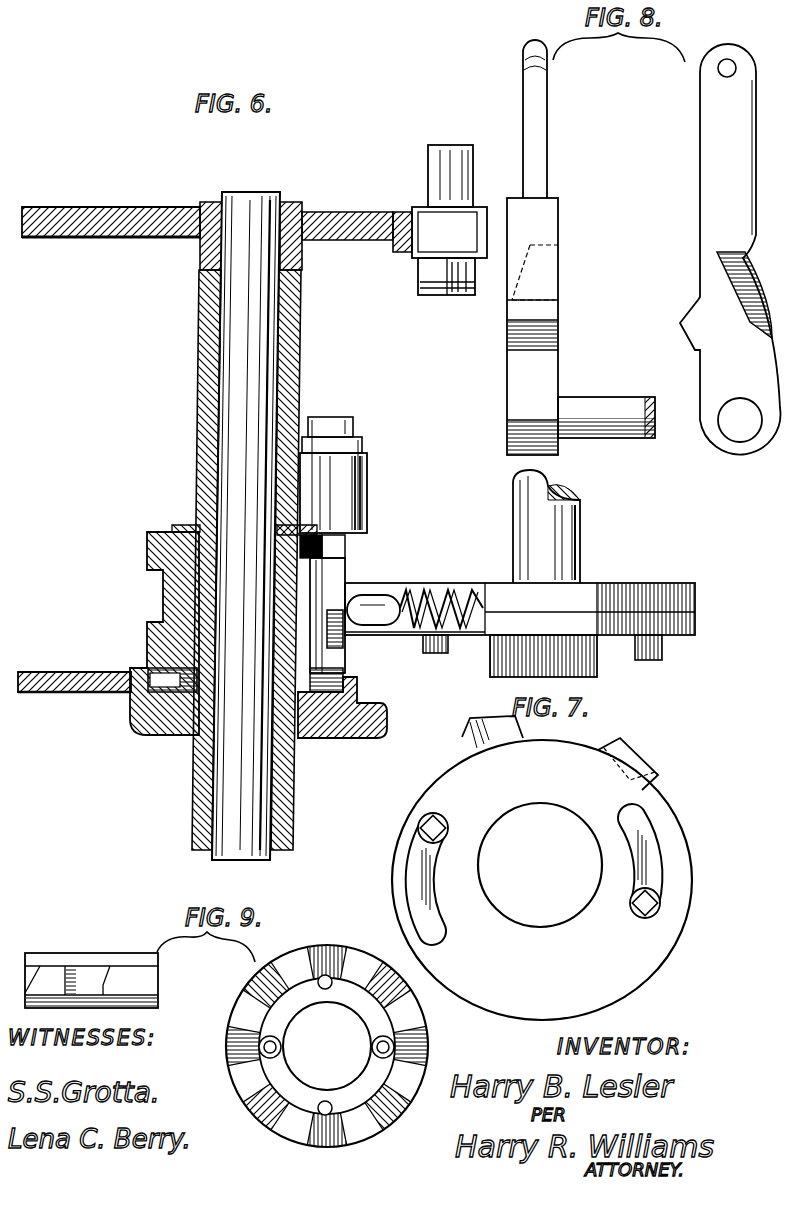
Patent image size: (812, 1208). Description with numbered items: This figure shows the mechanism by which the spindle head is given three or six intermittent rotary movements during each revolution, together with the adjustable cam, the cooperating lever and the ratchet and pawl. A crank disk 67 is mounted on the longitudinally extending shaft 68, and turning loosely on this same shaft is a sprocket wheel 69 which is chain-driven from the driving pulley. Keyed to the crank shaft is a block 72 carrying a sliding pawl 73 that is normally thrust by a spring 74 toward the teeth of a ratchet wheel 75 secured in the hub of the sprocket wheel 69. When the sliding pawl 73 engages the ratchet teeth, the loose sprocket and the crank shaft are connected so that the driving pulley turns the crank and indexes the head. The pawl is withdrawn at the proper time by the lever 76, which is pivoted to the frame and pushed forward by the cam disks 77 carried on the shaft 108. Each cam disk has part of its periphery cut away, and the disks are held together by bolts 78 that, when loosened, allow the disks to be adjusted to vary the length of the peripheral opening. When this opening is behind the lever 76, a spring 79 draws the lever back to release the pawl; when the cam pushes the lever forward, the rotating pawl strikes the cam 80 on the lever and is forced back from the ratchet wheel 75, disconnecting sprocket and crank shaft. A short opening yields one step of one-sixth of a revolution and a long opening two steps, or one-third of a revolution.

In FIG. 6, the crank disk 67 is at (135, 240).
In FIG. 6, the longitudinally extending shaft 68 is at (237, 298).
In FIG. 6, the sprocket wheel 69 is at (86, 672).
In FIG. 6, the block 72 is at (163, 602).
In FIG. 6, the sliding pawl 73 is at (345, 548).
In FIG. 9, the sliding pawl 73 is at (102, 952).
In FIG. 6, the spring 74 is at (332, 530).
In FIG. 6, the ratchet wheel 75 is at (328, 740).
In FIG. 9, the ratchet wheel 75 is at (333, 957).
In FIG. 6, the lever 76 is at (350, 578).
In FIG. 8, the lever 76 is at (643, 247).
In FIG. 6, the cam disks 77 is at (658, 588).
In FIG. 7, the cam disks 77 is at (542, 868).
In FIG. 6, the bolts 78 is at (437, 654).
In FIG. 7, the bolts 78 is at (448, 826).
In FIG. 6, the spring 79 is at (462, 586).
In FIG. 6, the cam 80 is at (345, 635).
In FIG. 8, the cam 80 is at (548, 287).
In FIG. 6, the shaft 108 is at (582, 508).